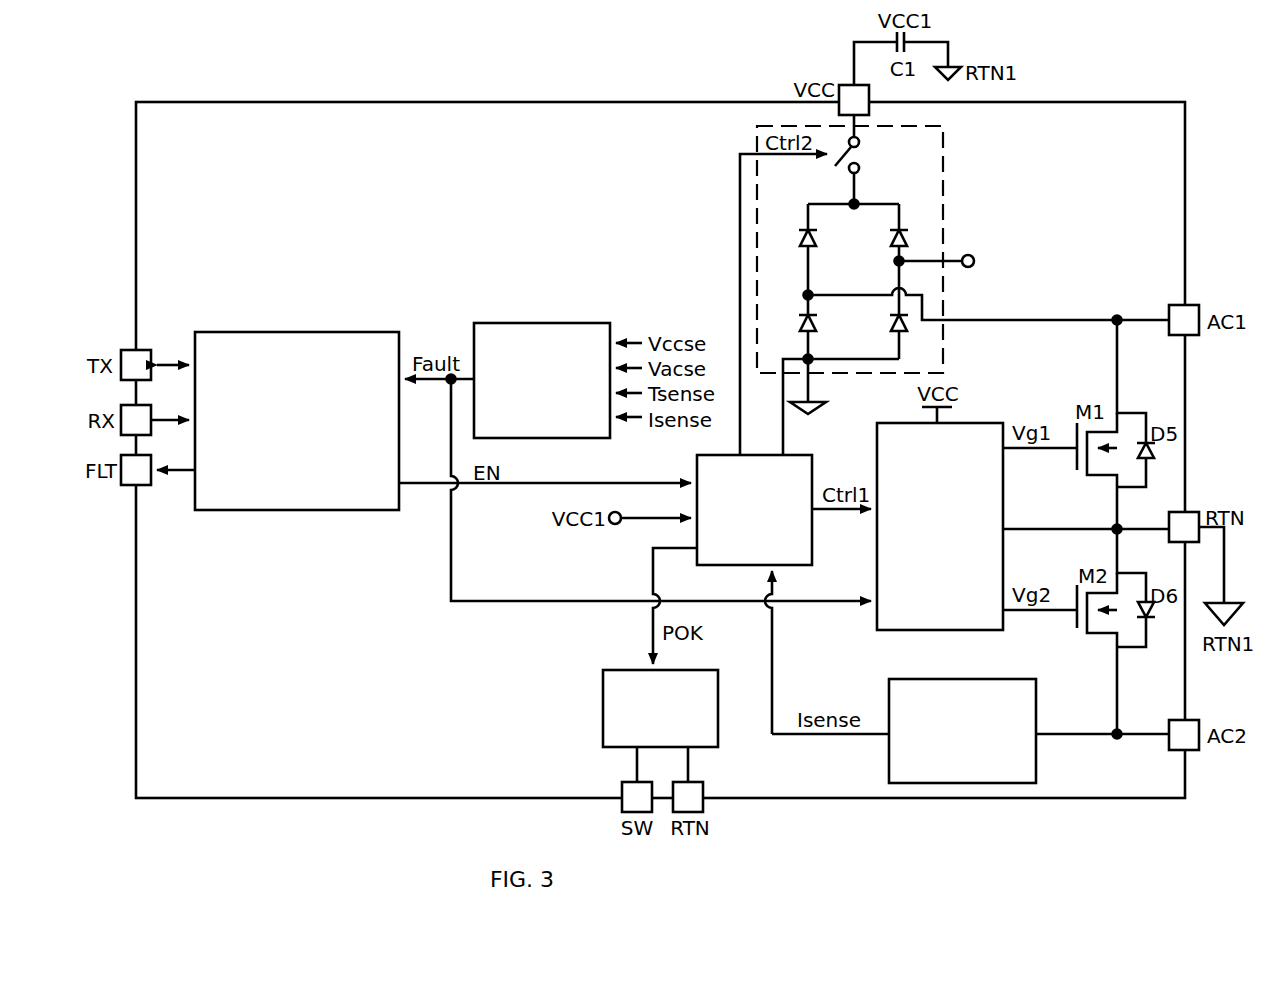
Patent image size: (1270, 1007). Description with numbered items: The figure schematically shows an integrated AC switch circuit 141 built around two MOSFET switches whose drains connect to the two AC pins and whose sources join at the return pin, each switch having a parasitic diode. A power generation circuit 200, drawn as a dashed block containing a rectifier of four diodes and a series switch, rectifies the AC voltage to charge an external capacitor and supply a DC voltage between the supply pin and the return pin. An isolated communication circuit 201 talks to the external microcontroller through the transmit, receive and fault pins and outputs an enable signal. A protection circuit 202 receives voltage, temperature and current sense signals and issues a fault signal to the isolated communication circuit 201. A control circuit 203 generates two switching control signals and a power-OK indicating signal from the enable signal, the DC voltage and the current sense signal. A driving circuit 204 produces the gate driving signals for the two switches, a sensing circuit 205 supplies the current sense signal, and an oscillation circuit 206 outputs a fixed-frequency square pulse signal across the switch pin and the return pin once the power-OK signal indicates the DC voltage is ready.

The integrated AC switch circuit 141 is at (1210, 110).
The power generation circuit 200 is at (944, 235).
The isolated communication circuit 201 is at (297, 421).
The protection circuit 202 is at (542, 380).
The control circuit 203 is at (754, 510).
The driving circuit 204 is at (940, 526).
The sensing circuit 205 is at (962, 731).
The oscillation circuit 206 is at (660, 708).